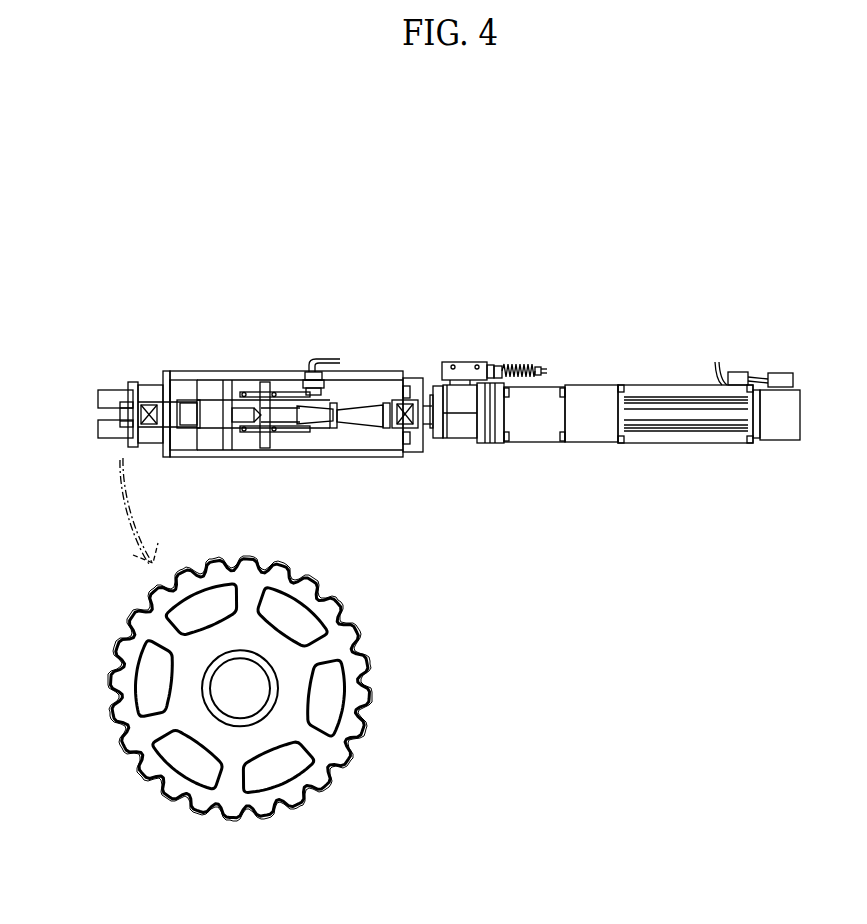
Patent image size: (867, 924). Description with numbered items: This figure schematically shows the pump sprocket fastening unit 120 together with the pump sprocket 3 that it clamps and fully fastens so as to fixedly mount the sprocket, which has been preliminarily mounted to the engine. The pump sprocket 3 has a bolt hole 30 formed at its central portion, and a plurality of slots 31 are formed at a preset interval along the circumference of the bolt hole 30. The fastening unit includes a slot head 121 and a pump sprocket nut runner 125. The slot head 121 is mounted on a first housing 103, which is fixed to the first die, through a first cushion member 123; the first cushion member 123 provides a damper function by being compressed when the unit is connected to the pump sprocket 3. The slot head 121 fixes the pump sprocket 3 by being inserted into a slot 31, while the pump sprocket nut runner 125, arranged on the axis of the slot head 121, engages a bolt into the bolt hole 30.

The pump sprocket fastening unit 120 is at (447, 196).
The slot head 121 is at (110, 388).
The first cushion member 123 is at (203, 388).
The first housing 103 is at (362, 372).
The pump sprocket nut runner 125 is at (477, 419).
The pump sprocket 3 is at (414, 688).
The slot 31 is at (312, 628).
The bolt hole 30 is at (263, 705).